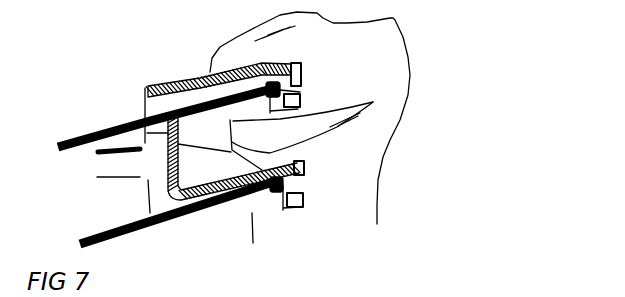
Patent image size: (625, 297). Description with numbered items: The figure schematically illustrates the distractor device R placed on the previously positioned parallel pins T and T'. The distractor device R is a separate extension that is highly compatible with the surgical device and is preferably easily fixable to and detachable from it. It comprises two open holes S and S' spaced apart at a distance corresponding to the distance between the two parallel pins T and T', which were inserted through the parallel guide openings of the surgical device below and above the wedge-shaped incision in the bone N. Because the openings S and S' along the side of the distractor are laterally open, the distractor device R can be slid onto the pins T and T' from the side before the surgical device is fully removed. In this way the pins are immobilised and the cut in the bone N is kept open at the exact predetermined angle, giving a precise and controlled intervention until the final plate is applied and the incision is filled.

The distractor device R is at (163, 103).
The open hole S is at (344, 72).
The open hole S' is at (369, 153).
The bone N is at (280, 121).
The parallel pin T is at (301, 220).
The parallel pin T' is at (409, 205).